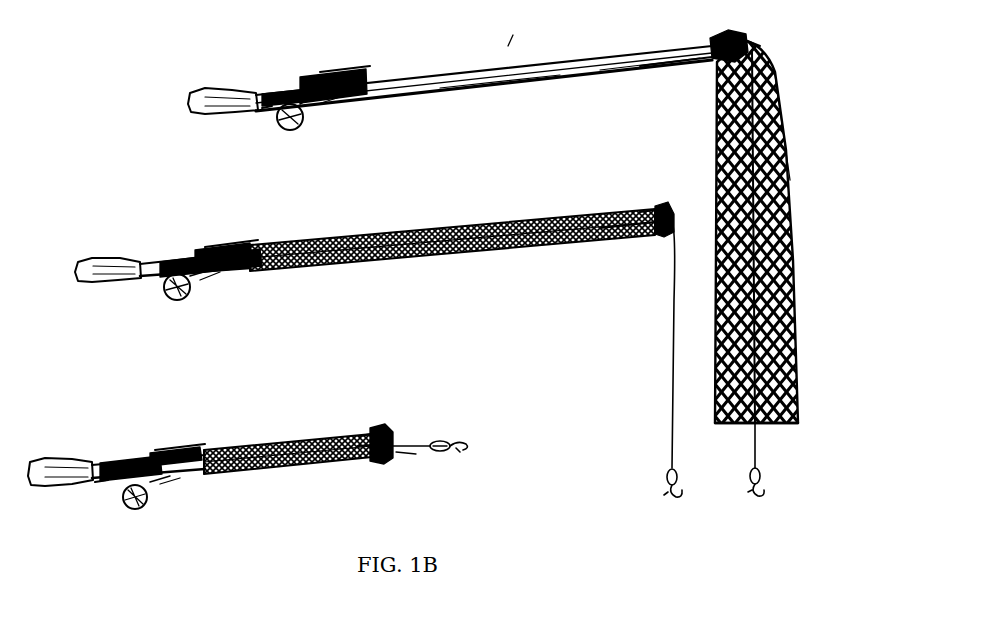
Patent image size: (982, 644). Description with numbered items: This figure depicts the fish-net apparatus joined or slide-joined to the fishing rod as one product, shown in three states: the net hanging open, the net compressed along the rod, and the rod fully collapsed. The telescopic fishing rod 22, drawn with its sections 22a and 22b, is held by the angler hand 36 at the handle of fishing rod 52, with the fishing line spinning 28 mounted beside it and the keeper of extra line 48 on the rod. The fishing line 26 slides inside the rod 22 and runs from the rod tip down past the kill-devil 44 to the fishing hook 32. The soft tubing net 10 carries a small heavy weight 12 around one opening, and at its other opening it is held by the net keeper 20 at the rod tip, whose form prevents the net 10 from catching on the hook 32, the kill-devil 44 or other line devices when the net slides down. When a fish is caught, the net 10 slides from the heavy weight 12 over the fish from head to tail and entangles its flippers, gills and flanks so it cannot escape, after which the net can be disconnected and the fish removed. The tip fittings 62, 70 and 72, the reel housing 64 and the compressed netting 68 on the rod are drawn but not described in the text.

The tubing net 10 is at (529, 269).
The small heavy weight 12 is at (778, 424).
The net keeper 20 is at (706, 40).
The telescopic fishing rod 22 is at (442, 94).
The rod middle section 22a is at (568, 82).
The rod tip section 22b is at (679, 70).
The fishing line 26 is at (316, 99).
The fishing line spinning 28 is at (277, 128).
The fishing hook 32 is at (770, 492).
The angler hand 36 is at (214, 90).
The kill-devil 44 is at (760, 476).
The keeper of extra line 48 is at (336, 74).
The handle of fishing rod 52 is at (268, 107).
The rod tip 62 is at (662, 46).
The reel housing 64 is at (268, 92).
The mesh net 68 is at (800, 400).
The tip ring 70 is at (772, 48).
The line loop 72 is at (332, 100).